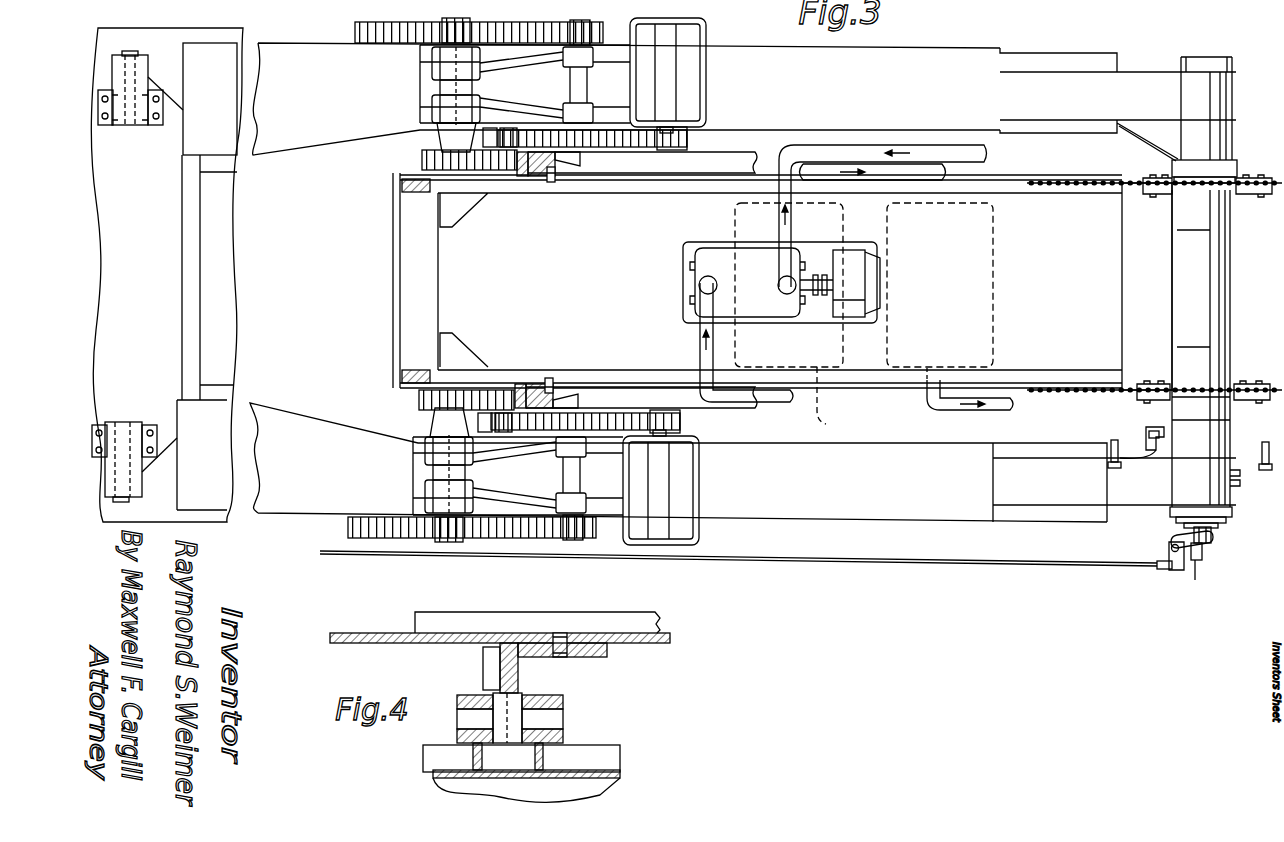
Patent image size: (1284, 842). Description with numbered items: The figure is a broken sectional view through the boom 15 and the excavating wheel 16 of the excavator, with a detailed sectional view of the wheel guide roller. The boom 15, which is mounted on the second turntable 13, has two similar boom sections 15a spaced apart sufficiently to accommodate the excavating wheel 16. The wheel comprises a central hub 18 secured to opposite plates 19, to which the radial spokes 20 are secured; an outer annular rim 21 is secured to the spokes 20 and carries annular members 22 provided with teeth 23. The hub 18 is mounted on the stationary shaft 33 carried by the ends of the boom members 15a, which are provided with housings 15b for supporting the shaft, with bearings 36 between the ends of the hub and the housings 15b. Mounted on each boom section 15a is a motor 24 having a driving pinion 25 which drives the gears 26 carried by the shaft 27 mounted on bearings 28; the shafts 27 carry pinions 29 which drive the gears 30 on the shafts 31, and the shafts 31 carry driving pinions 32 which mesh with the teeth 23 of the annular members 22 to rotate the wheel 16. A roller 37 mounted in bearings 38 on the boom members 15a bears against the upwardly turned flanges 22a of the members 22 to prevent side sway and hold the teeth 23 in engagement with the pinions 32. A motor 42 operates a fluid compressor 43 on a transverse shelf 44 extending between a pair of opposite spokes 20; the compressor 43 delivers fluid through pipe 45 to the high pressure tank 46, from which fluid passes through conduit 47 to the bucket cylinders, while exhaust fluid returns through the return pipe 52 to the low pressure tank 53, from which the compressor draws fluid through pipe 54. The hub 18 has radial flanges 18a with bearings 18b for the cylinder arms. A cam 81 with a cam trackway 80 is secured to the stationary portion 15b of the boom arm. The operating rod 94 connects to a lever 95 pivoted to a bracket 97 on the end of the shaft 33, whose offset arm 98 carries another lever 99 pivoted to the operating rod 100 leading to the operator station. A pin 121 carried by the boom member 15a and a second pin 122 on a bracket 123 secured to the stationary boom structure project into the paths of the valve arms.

In FIG. 3, the second turntable 13 is at (165, 267).
In FIG. 3, the boom 15 is at (763, 299).
In FIG. 3, the boom sections 15a is at (910, 66).
In FIG. 4, the boom sections 15a is at (615, 790).
In FIG. 3, the housings 15b is at (1240, 136).
In FIG. 3, the excavating wheel 16 is at (810, 285).
In FIG. 3, the central hub 18 is at (1232, 248).
In FIG. 3, the radial flanges 18a is at (1245, 195).
In FIG. 3, the bearings 18b is at (1160, 195).
In FIG. 3, the opposite plates 19 is at (1104, 181).
In FIG. 3, the radial ribs or spokes 20 is at (1008, 194).
In FIG. 4, the radial ribs or spokes 20 is at (630, 620).
In FIG. 3, the outer annular plate or rim 21 is at (655, 183).
In FIG. 4, the outer annular plate or rim 21 is at (368, 632).
In FIG. 3, the annular members 22 is at (538, 178).
In FIG. 4, the annular members 22 is at (606, 657).
In FIG. 3, the upwardly turned flanges 22a is at (560, 157).
In FIG. 4, the upwardly turned flanges 22a is at (500, 652).
In FIG. 3, the teeth 23 is at (520, 178).
In FIG. 4, the teeth 23 is at (483, 676).
In FIG. 3, the motors 24 is at (700, 44).
In FIG. 3, the driving pinion 25 is at (690, 141).
In FIG. 3, the gears 26 is at (612, 176).
In FIG. 3, the shaft 27 is at (591, 85).
In FIG. 3, the bearings 28 is at (565, 64).
In FIG. 3, the pinions 29 is at (595, 30).
In FIG. 3, the gears 30 is at (512, 24).
In FIG. 3, the shafts 31 is at (462, 20).
In FIG. 3, the driving pinions 32 is at (420, 159).
In FIG. 3, the stationary shaft 33 is at (1208, 56).
In FIG. 3, the bearings 36 is at (1238, 177).
In FIG. 3, the roller 37 is at (482, 127).
In FIG. 4, the roller 37 is at (522, 706).
In FIG. 3, the bearings 38 is at (504, 127).
In FIG. 4, the bearings 38 is at (563, 709).
In FIG. 3, the motor 42 is at (846, 255).
In FIG. 3, the fluid compressor 43 is at (715, 256).
In FIG. 3, the transverse shelf 44 is at (1105, 277).
In FIG. 3, the pipe 45 is at (826, 165).
In FIG. 3, the high pressure tank 46 is at (993, 271).
In FIG. 3, the conduit 47 is at (1013, 406).
In FIG. 3, the return pipe 52 is at (876, 146).
In FIG. 3, the low pressure tank 53 is at (830, 401).
In FIG. 3, the pipe 54 is at (700, 343).
In FIG. 3, the cam trackway 80 is at (1146, 436).
In FIG. 3, the cam 81 is at (1154, 431).
In FIG. 3, the operating rod 94 is at (1196, 580).
In FIG. 3, the lever 95 is at (1203, 550).
In FIG. 3, the bracket 97 is at (1212, 532).
In FIG. 3, the offset arm 98 is at (1170, 540).
In FIG. 3, the lever 99 is at (1169, 553).
In FIG. 3, the operating rod 100 is at (1064, 568).
In FIG. 3, the pin 121 is at (1113, 440).
In FIG. 3, the second pin 122 is at (1266, 441).
In FIG. 3, the bracket 123 is at (1257, 463).